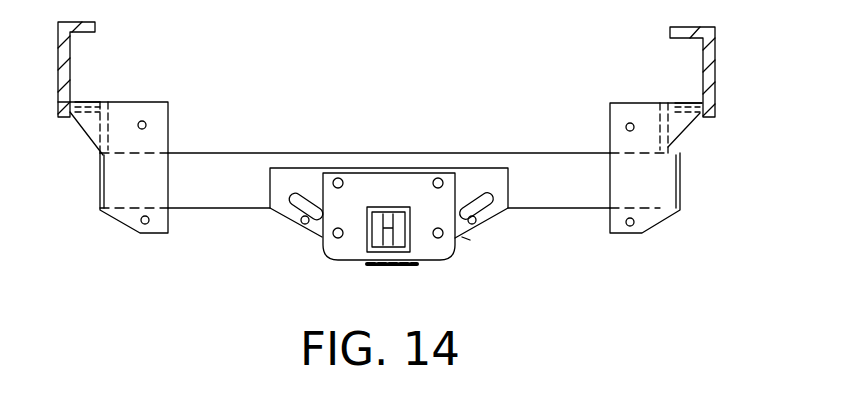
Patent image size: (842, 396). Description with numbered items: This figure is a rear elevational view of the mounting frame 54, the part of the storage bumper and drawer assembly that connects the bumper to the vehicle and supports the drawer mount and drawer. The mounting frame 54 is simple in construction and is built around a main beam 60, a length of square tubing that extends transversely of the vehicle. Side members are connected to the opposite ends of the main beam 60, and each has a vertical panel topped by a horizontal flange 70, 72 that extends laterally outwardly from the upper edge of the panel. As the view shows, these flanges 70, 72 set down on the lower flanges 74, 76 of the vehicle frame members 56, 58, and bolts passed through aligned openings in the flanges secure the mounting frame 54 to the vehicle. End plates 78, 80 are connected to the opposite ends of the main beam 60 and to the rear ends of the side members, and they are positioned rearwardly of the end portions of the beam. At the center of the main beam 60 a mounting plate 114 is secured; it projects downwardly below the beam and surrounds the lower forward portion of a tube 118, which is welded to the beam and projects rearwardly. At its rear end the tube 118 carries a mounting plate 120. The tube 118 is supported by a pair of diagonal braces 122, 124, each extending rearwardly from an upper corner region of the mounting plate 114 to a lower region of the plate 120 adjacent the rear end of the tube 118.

The mounting frame 54 is at (476, 243).
The vehicle frame member 56 is at (60, 24).
The vehicle frame member 58 is at (719, 80).
The main beam 60 is at (209, 197).
The horizontal flange 70 is at (81, 101).
The horizontal flange 72 is at (680, 100).
The lower flange 74 is at (73, 118).
The lower flange 76 is at (700, 122).
The end plate 78 is at (118, 190).
The end plate 80 is at (648, 198).
The mounting plate 114 is at (278, 220).
The tube 118 is at (410, 230).
The mounting plate 120 is at (427, 257).
The diagonal brace 122 is at (305, 210).
The diagonal brace 124 is at (486, 196).